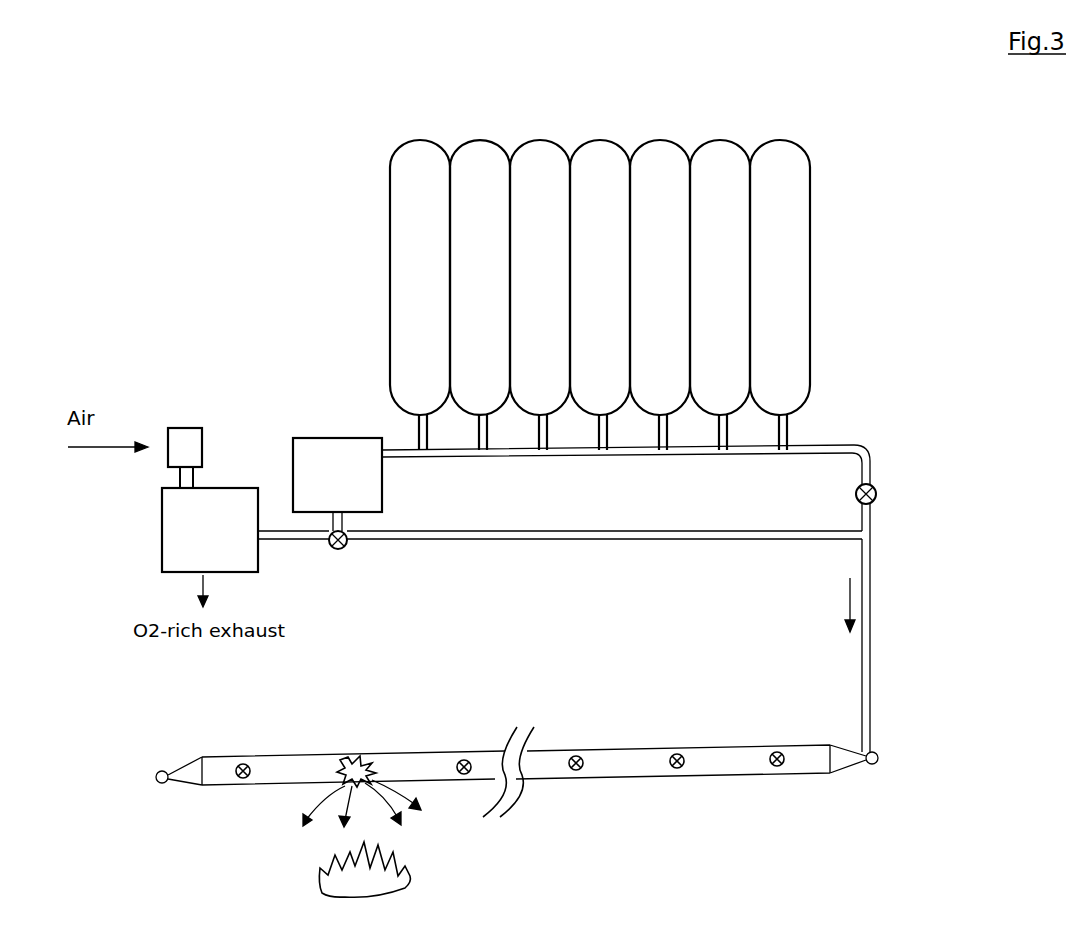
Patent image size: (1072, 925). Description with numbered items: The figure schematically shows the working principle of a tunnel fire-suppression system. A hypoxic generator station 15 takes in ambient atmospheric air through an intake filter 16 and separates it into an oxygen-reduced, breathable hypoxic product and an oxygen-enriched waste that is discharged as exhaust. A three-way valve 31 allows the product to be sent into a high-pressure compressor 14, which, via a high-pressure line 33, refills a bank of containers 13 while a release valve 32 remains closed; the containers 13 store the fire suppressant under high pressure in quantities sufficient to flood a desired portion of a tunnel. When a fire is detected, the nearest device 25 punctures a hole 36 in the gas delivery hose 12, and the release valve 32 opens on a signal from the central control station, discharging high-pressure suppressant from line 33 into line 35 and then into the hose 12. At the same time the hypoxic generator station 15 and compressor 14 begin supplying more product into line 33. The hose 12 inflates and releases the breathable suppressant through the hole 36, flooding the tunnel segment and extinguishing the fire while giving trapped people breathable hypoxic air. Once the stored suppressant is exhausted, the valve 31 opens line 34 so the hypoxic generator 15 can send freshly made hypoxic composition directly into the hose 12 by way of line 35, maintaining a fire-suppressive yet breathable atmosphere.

The gas delivery hose 12 is at (270, 770).
The containers 13 is at (655, 150).
The high-pressure compressor 14 is at (337, 475).
The hypoxic generator station 15 is at (210, 547).
The intake filter 16 is at (177, 438).
The device 25 is at (580, 765).
The three-way valve 31 is at (345, 550).
The release valve 32 is at (878, 488).
The high-pressure line 33 is at (690, 452).
The line 34 is at (620, 538).
The line 35 is at (875, 668).
The hole 36 is at (348, 760).